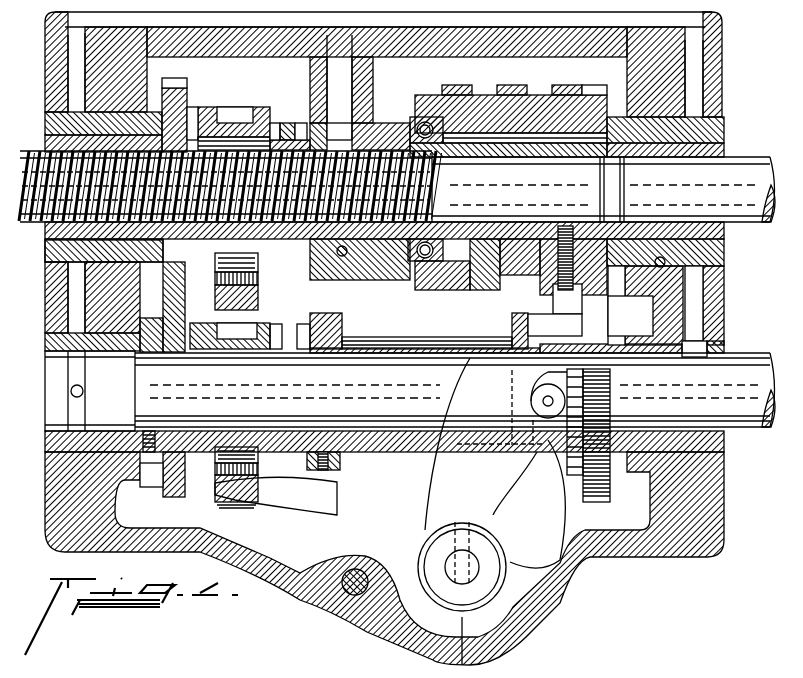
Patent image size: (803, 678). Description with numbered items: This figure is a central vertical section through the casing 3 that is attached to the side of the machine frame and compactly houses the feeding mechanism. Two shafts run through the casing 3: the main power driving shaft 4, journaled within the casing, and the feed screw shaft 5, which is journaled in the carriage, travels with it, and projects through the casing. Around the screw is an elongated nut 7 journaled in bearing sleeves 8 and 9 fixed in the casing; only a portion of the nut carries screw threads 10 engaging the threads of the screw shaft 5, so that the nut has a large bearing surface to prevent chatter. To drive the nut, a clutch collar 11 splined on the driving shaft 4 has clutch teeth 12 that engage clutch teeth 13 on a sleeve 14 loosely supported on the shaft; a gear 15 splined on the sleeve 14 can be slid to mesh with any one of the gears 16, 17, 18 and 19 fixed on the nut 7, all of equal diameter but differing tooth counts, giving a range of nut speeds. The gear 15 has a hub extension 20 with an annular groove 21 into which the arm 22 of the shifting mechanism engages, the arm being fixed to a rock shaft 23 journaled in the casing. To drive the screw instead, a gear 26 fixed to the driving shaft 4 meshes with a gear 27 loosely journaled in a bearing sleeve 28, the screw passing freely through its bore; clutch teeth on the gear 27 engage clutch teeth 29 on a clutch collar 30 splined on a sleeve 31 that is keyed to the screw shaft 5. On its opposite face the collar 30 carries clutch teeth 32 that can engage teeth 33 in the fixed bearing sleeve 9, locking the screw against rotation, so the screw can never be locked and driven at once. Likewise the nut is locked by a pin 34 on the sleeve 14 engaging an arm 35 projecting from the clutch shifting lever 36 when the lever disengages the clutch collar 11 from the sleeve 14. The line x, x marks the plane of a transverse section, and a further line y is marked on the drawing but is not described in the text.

The casing 3 is at (724, 505).
The main power driving shaft 4 is at (735, 365).
The feed screw shaft 5 is at (397, 145).
The nut 7 is at (722, 143).
The bearing sleeve 8 is at (722, 125).
The bearing sleeve 9 is at (383, 152).
The screw threads 10 is at (428, 90).
The clutch collar 11 is at (202, 470).
The clutch teeth 12 is at (276, 325).
The clutch teeth 13 is at (312, 318).
The sleeve 14 is at (346, 338).
The gear 15 is at (604, 308).
The gear 16 is at (596, 90).
The gear 17 is at (543, 92).
The gear 18 is at (492, 92).
The gear 19 is at (452, 88).
The hub extension 20 is at (557, 455).
The annular groove 21 is at (530, 470).
The arm 22 is at (437, 500).
The rock shaft 23 is at (472, 562).
The gear 26 is at (165, 480).
The gear 27 is at (187, 82).
The bearing sleeve 28 is at (48, 252).
The clutch teeth 29 is at (190, 102).
The clutch collar 30 is at (232, 122).
The sleeve 31 is at (283, 145).
The clutch teeth 32 is at (276, 122).
The teeth 33 is at (260, 262).
The pin 34 is at (340, 462).
The arm 35 is at (320, 510).
The clutch shifting lever 36 is at (243, 504).
The section line x x is at (513, 313).
The axis line y is at (461, 647).